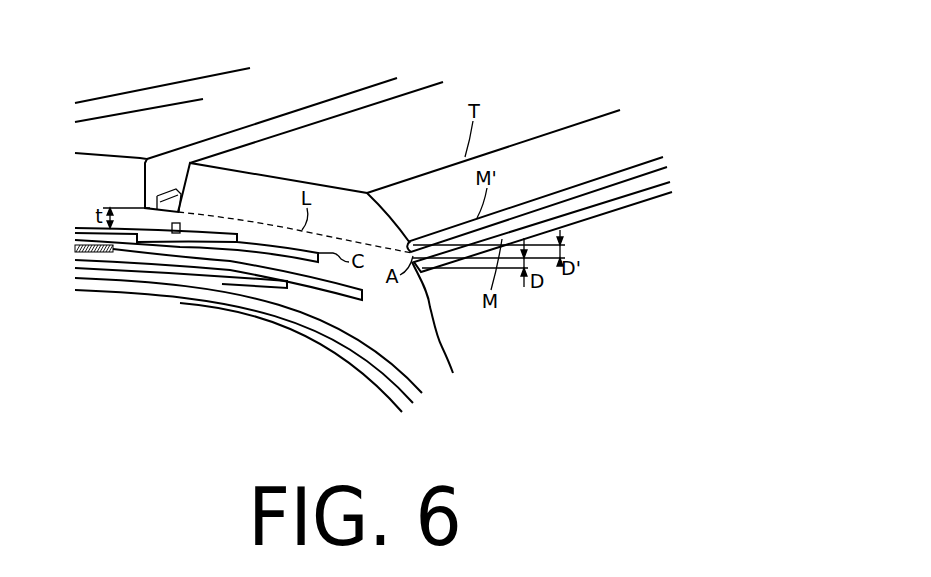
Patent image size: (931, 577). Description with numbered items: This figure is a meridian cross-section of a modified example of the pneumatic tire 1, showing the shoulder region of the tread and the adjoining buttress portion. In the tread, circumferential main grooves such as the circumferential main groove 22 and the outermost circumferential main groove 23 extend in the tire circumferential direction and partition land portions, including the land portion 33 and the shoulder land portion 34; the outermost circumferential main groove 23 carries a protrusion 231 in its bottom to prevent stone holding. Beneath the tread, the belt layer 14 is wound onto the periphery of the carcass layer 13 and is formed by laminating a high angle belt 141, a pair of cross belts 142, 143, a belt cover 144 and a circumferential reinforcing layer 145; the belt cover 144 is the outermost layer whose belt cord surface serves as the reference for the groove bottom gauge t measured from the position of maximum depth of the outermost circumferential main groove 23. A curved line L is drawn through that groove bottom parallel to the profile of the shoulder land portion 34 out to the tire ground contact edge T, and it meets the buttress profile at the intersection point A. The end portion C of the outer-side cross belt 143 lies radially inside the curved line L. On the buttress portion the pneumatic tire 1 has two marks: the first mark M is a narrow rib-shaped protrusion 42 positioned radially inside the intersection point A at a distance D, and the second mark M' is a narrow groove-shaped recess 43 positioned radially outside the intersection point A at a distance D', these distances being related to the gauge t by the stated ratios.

The pneumatic tire 1 is at (571, 44).
The carcass layer 13 is at (313, 314).
The belt layer 14 is at (212, 324).
The high angle belt 141 is at (62, 381).
The cross belt 142 is at (227, 260).
The cross belt 143 is at (178, 245).
The belt cover 144 is at (137, 237).
The circumferential reinforcing layer 145 is at (93, 251).
The circumferential main groove 22 is at (178, 81).
The outermost circumferential main groove 23 is at (362, 91).
The protrusion 231 is at (174, 222).
The land portion 33 is at (292, 79).
The shoulder land portion 34 is at (502, 100).
The protrusion 42 is at (603, 208).
The recess 43 is at (573, 188).